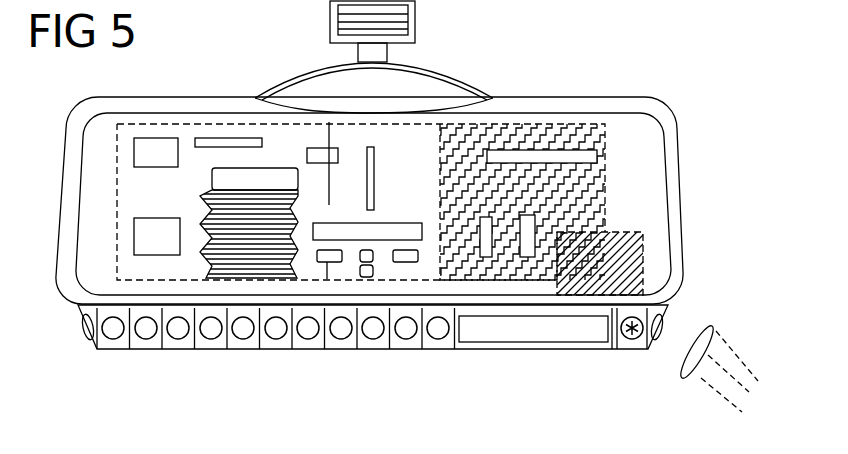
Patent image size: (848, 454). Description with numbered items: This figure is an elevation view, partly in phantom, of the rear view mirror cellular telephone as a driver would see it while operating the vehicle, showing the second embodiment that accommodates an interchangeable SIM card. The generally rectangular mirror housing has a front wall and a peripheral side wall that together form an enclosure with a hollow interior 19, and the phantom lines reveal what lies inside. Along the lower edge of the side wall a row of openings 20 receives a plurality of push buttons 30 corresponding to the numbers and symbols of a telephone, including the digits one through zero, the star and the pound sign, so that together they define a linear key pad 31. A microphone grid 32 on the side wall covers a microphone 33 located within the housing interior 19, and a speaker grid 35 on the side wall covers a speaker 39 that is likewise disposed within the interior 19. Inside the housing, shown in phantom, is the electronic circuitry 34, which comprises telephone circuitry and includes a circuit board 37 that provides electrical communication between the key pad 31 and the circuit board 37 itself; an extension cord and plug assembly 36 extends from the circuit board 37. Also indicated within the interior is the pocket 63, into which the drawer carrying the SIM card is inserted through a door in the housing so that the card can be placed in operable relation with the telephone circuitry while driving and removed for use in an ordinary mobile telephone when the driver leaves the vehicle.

The hollow interior 19 is at (92, 253).
The openings 20 is at (108, 353).
The push buttons 30 is at (328, 350).
The linear key pad 31 is at (232, 350).
The microphone grid 32 is at (683, 358).
The microphone 33 is at (665, 289).
The electronic circuitry 34 is at (121, 128).
The speaker grid 35 is at (298, 101).
The extension cord and plug assembly 36 is at (222, 172).
The circuit board 37 is at (550, 156).
The speaker 39 is at (370, 110).
The pocket 63 is at (644, 250).